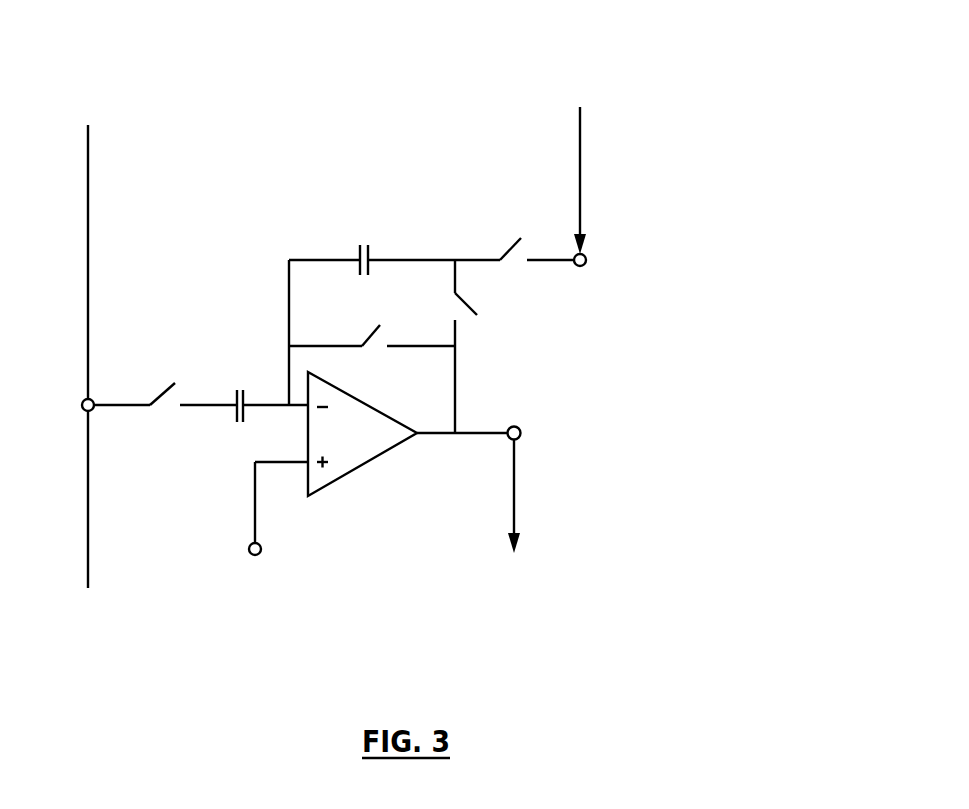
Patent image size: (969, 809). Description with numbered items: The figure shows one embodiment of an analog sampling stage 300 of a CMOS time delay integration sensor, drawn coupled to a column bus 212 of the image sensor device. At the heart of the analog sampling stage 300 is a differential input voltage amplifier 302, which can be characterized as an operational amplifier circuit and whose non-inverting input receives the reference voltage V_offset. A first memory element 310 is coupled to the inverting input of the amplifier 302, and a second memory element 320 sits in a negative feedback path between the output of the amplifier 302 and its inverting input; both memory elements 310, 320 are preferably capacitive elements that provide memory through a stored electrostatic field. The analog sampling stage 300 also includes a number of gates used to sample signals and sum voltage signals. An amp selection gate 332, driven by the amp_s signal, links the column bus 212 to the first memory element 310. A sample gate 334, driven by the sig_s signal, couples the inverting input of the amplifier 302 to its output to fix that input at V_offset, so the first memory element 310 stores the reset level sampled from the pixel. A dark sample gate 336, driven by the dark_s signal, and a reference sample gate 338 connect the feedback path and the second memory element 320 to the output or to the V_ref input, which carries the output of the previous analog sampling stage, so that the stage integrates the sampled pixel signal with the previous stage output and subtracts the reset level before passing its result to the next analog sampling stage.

The analog sampling stage 300 is at (478, 123).
The column bus 212 is at (88, 228).
The amp selection gate 332 is at (161, 393).
The first memory element 310 is at (240, 432).
The differential input voltage amplifier 302 is at (363, 465).
The second memory element 320 is at (372, 250).
The reference sample gate 338 is at (525, 246).
The sample gate 334 is at (380, 325).
The dark sample gate 336 is at (463, 317).